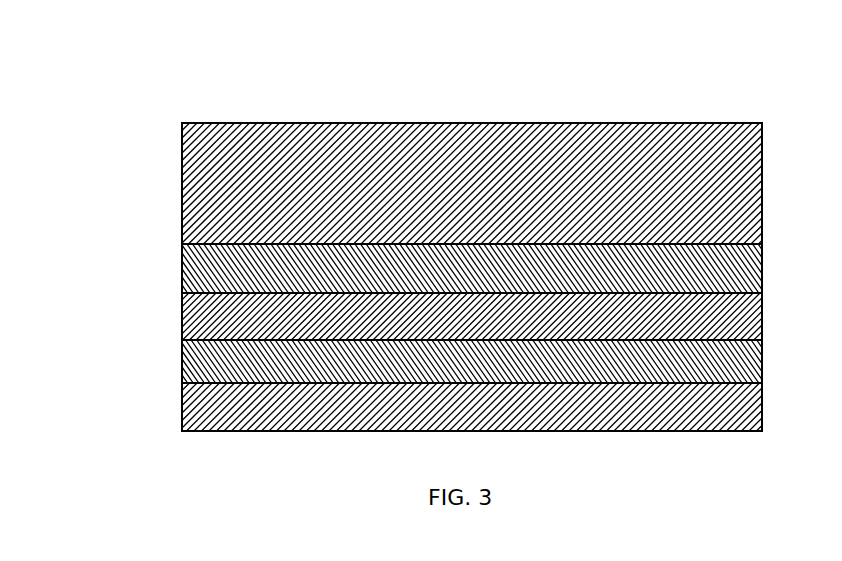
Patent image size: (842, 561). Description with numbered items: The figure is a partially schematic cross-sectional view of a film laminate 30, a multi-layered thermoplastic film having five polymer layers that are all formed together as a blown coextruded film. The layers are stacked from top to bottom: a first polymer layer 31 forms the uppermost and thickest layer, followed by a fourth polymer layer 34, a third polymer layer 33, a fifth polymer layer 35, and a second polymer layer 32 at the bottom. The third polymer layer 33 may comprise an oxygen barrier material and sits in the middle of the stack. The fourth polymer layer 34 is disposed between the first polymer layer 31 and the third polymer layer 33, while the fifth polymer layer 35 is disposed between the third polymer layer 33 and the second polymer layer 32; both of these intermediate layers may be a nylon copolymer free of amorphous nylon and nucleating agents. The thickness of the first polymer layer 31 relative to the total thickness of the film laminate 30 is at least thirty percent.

The film laminate 30 is at (487, 105).
The first polymer layer 31 is at (181, 225).
The fourth polymer layer 34 is at (181, 272).
The third polymer layer 33 is at (181, 323).
The fifth polymer layer 35 is at (181, 365).
The second polymer layer 32 is at (181, 412).